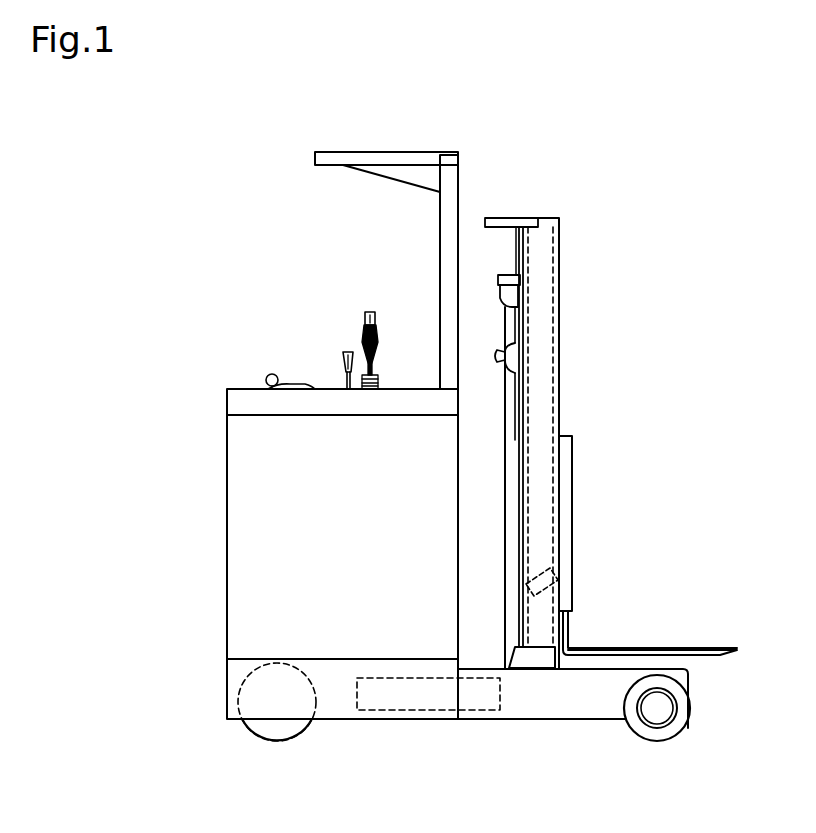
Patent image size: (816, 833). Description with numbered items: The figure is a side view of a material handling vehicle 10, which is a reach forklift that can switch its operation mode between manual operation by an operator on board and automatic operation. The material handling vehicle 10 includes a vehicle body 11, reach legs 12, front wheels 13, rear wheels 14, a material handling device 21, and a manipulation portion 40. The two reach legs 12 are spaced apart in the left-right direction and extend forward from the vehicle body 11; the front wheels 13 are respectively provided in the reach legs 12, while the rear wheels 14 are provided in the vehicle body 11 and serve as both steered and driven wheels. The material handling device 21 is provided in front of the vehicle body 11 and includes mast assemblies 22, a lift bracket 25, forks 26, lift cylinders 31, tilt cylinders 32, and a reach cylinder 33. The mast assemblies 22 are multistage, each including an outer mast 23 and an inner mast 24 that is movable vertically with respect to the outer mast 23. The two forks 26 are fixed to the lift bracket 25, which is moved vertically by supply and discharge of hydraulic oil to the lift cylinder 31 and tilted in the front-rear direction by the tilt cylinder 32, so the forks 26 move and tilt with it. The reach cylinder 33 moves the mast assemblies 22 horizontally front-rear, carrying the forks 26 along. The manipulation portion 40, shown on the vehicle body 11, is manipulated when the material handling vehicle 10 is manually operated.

The material handling vehicle 10 is at (197, 246).
The vehicle body 11 is at (227, 467).
The reach legs 12 is at (575, 716).
The front wheels 13 is at (677, 726).
The rear wheels 14 is at (281, 661).
The material handling device 21 is at (612, 258).
The mast assemblies 22 is at (561, 232).
The outer mast 23 is at (541, 350).
The inner mast 24 is at (553, 297).
The lift bracket 25 is at (572, 473).
The forks 26 is at (697, 647).
The lift cylinder 31 is at (507, 390).
The tilt cylinder 32 is at (546, 571).
The reach cylinder 33 is at (383, 711).
The manipulation portion 40 is at (333, 323).